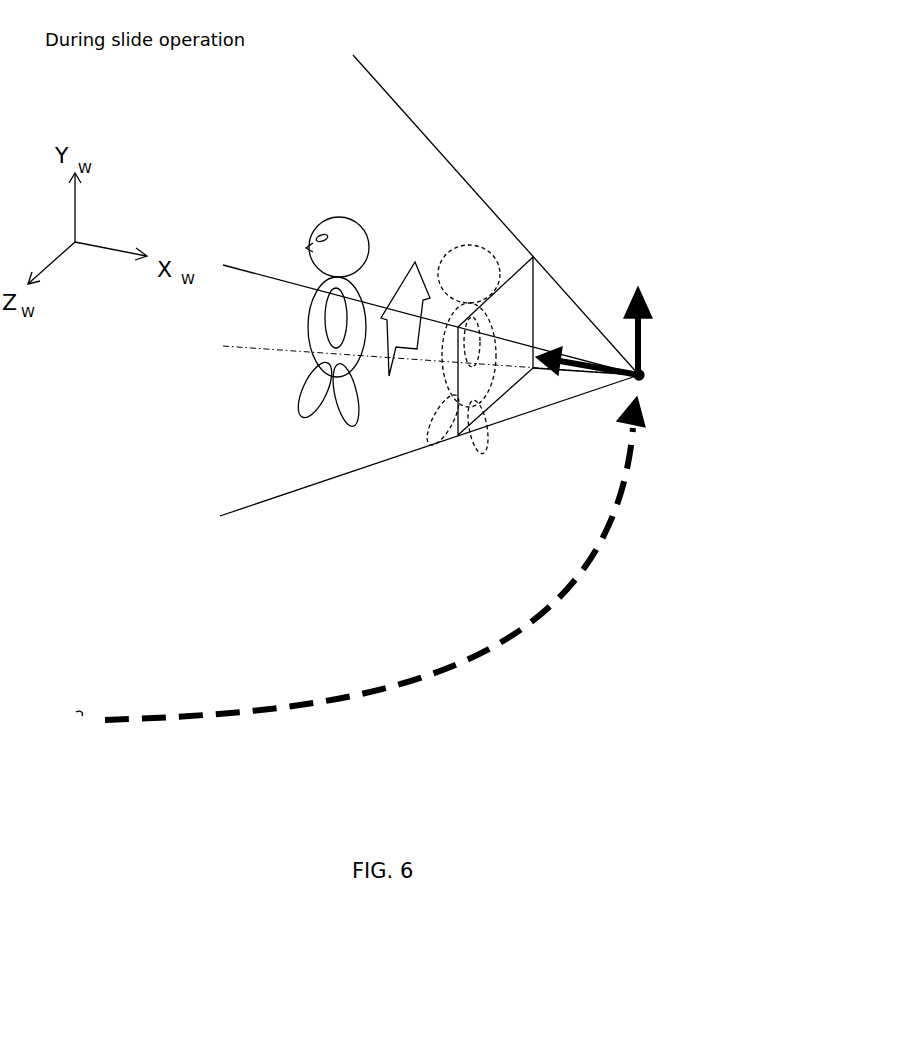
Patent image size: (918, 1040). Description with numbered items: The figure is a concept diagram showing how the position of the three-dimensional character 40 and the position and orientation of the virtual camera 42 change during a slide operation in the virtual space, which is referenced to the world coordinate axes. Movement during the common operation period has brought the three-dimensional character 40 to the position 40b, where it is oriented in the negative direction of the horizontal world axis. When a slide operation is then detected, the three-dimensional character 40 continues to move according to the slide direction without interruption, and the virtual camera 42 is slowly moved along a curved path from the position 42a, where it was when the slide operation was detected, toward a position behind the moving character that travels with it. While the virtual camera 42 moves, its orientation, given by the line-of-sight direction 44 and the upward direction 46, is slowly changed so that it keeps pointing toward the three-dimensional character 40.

The three-dimensional character 40 is at (340, 203).
The position of three-dimensional character 40b is at (468, 223).
The virtual camera 42 is at (648, 380).
The position of virtual camera 42a is at (82, 712).
The line-of-sight direction 44 is at (590, 365).
The upward direction 46 is at (644, 345).